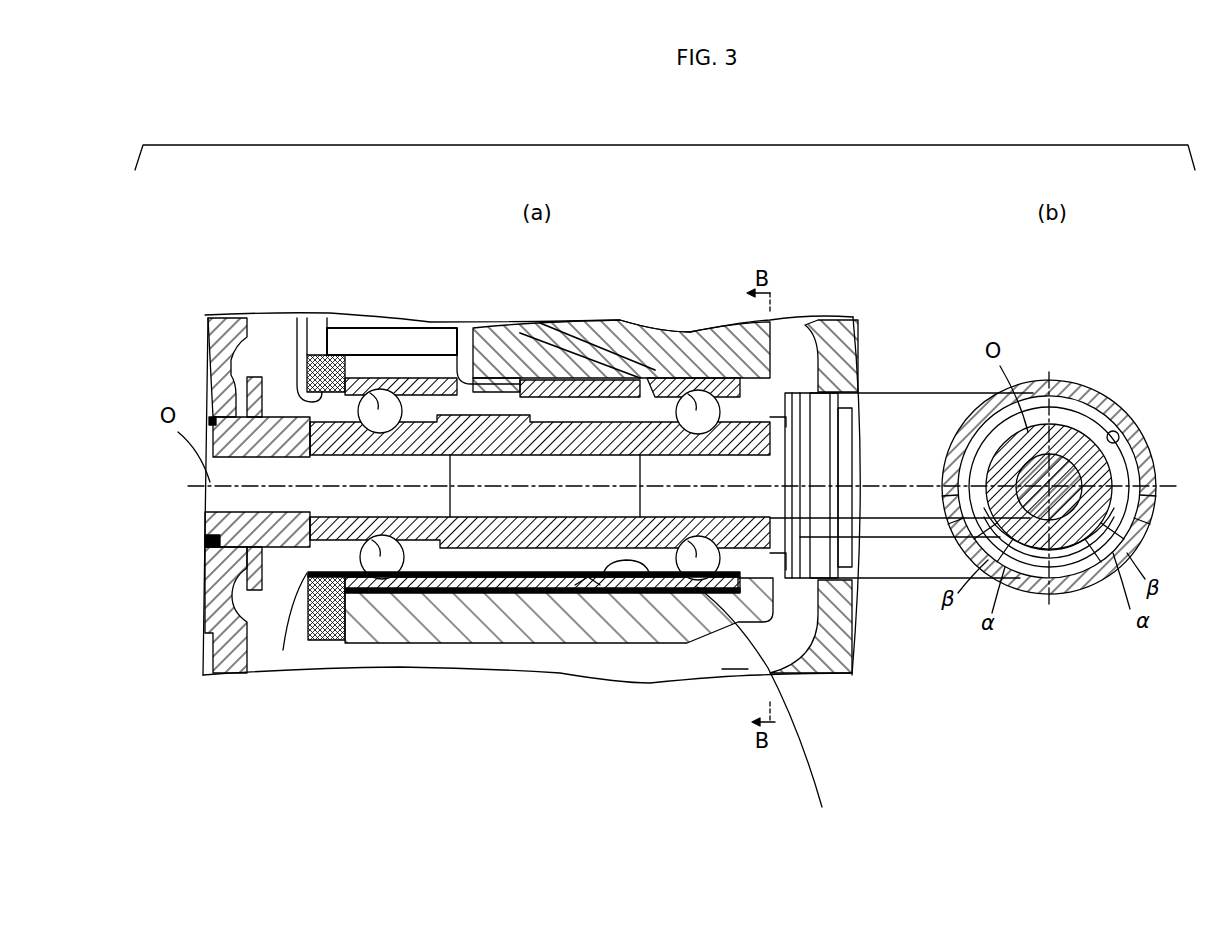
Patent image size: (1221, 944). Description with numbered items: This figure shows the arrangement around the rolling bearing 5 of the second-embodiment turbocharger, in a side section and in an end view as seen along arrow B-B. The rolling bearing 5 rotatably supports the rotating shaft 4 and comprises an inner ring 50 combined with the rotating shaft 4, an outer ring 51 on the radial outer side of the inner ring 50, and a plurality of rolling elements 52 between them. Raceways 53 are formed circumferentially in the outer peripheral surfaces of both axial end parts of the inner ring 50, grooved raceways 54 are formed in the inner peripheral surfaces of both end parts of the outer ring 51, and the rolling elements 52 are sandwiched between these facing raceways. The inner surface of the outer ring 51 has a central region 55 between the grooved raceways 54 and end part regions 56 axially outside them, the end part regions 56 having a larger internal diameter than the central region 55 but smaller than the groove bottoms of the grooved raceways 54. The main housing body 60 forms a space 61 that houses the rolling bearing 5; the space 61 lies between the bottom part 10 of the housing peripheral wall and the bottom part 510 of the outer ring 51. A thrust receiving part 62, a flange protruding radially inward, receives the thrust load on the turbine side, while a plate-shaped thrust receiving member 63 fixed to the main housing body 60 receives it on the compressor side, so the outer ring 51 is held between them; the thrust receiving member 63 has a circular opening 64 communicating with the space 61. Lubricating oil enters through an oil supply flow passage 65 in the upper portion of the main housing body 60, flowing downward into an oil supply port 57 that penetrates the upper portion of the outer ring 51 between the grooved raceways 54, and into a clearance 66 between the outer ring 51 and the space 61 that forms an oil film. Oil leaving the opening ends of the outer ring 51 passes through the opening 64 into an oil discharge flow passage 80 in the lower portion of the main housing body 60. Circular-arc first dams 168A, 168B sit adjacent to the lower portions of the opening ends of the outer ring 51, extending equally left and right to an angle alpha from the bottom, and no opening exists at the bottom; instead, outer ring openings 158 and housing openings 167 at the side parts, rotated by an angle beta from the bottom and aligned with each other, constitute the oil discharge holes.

The rotating shaft 4 is at (223, 498).
The rolling bearing 5 is at (777, 396).
The bottom part of the peripheral wall of the housing 10 is at (762, 716).
The inner ring 50 is at (527, 420).
The outer ring 51 is at (423, 572).
The rolling elements 52 is at (358, 395).
The raceways 53 is at (387, 430).
The grooved raceways 54 is at (395, 398).
The central region 55 is at (453, 545).
The end part regions 56 is at (327, 515).
The oil supply port 57 is at (593, 357).
The main housing body 60 is at (603, 578).
The space 61 is at (550, 594).
The thrust receiving part 62 is at (785, 665).
The thrust receiving member 63 is at (325, 643).
The opening 64 is at (297, 397).
The oil supply flow passage 65 is at (493, 355).
The clearance 66 is at (517, 596).
The oil discharge flow passage 80 is at (735, 656).
The outer ring openings 158 is at (958, 501).
The housing openings 167 is at (1000, 537).
The first dam 168A is at (845, 607).
The first dam 168B is at (283, 650).
The bottom part of the outer ring 510 is at (650, 566).